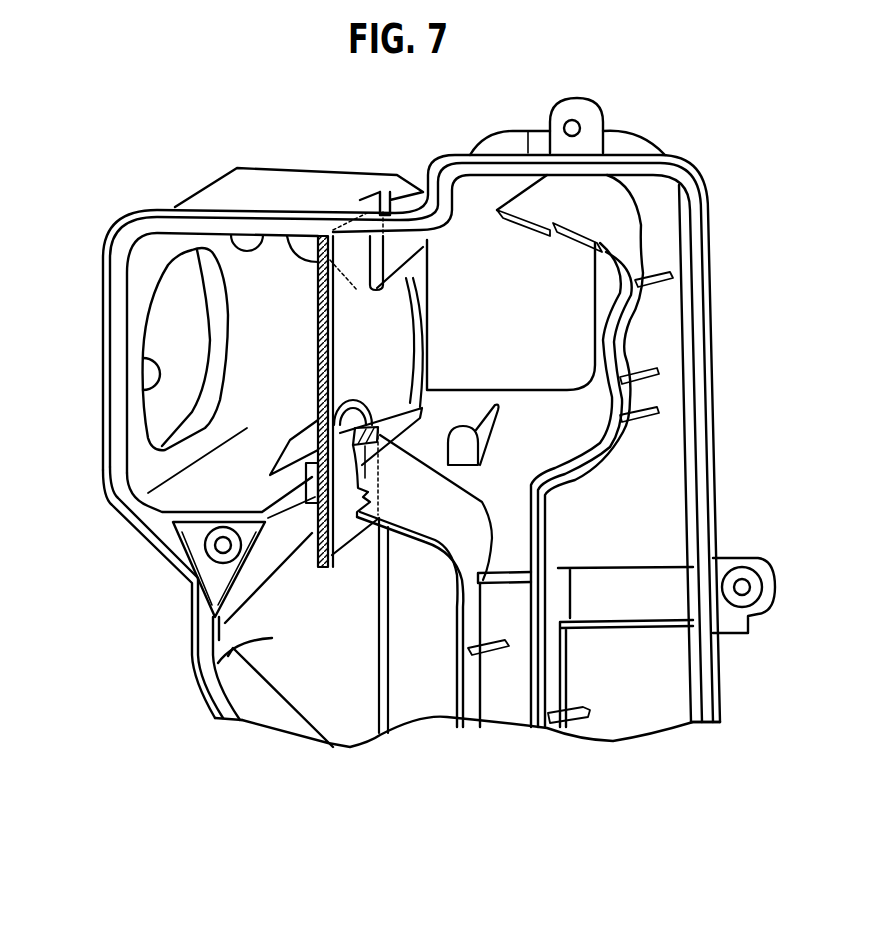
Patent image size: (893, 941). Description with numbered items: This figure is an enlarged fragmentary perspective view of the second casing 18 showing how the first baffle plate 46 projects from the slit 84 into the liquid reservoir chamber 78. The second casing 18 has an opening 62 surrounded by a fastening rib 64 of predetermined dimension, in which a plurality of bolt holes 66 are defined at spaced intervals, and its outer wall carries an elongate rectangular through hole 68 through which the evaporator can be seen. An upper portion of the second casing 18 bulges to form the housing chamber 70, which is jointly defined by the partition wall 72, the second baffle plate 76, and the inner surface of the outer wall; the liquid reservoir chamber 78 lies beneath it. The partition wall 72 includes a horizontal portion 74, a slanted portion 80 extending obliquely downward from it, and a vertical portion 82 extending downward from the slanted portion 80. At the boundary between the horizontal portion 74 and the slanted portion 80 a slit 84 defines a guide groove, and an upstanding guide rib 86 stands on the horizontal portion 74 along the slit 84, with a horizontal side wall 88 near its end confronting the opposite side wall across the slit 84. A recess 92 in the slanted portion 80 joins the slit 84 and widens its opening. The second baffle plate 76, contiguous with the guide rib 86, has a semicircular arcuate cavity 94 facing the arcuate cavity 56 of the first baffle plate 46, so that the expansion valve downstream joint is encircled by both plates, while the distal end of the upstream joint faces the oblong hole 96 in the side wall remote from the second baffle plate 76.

The second casing 18 is at (632, 148).
The first baffle plate 46 is at (343, 535).
The arcuate cavity 56 is at (332, 368).
The opening 62 is at (686, 459).
The fastening rib 64 is at (690, 308).
The bolt holes 66 is at (575, 121).
The through hole 68 is at (350, 747).
The housing chamber 70 is at (247, 390).
The partition wall 72 is at (602, 451).
The horizontal portion 74 is at (195, 500).
The second baffle plate 76 is at (420, 267).
The liquid reservoir chamber 78 is at (240, 661).
The slanted portion 80 is at (437, 523).
The vertical portion 82 is at (473, 677).
The slit 84 is at (358, 417).
The guide rib 86 is at (398, 434).
The horizontal side wall 88 is at (303, 494).
The recess 92 is at (370, 483).
The arcuate cavity 94 is at (420, 337).
The oblong hole 96 is at (143, 395).